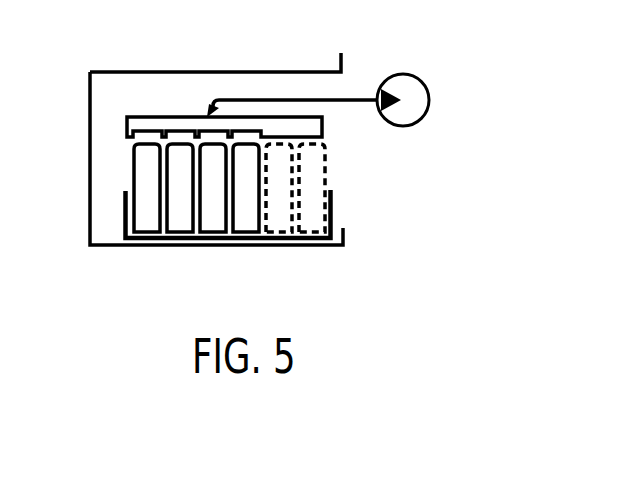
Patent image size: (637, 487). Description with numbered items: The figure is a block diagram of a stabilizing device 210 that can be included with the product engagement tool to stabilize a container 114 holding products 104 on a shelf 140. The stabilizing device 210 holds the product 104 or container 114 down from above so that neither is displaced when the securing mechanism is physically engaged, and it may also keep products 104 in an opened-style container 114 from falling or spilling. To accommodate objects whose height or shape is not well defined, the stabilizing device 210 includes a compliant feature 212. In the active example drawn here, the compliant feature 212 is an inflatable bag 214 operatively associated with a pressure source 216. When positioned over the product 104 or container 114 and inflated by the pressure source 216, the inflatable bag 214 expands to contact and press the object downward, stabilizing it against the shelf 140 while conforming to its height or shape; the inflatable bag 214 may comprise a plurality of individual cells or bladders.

The product 104 is at (148, 157).
The container 114 is at (122, 210).
The shelf 140 is at (347, 245).
The stabilizing device 210 is at (360, 74).
The compliant feature 212 is at (310, 132).
The inflatable bag 214 is at (173, 116).
The pressure source 216 is at (426, 111).